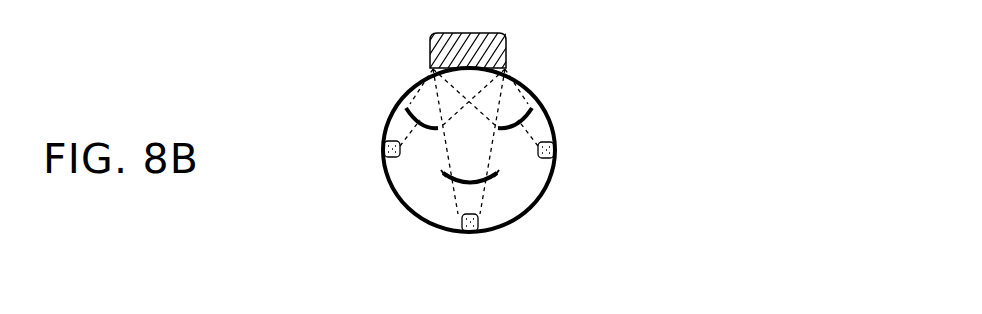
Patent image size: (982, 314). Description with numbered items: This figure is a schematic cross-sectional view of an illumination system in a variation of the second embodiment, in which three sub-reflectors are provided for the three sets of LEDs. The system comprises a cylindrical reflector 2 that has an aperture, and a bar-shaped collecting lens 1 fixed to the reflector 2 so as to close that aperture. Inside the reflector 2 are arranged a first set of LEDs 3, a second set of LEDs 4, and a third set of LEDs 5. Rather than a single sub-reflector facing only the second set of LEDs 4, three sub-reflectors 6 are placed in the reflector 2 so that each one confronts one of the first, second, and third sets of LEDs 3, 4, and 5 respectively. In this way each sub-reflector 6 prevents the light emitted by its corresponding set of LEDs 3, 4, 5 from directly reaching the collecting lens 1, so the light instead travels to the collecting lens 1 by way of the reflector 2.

The collecting lens 1 is at (586, 48).
The reflector 2 is at (559, 145).
The first set of LEDs 3 is at (317, 193).
The second set of LEDs 4 is at (597, 251).
The third set of LEDs 5 is at (692, 163).
The sub-reflector 6 is at (507, 160).